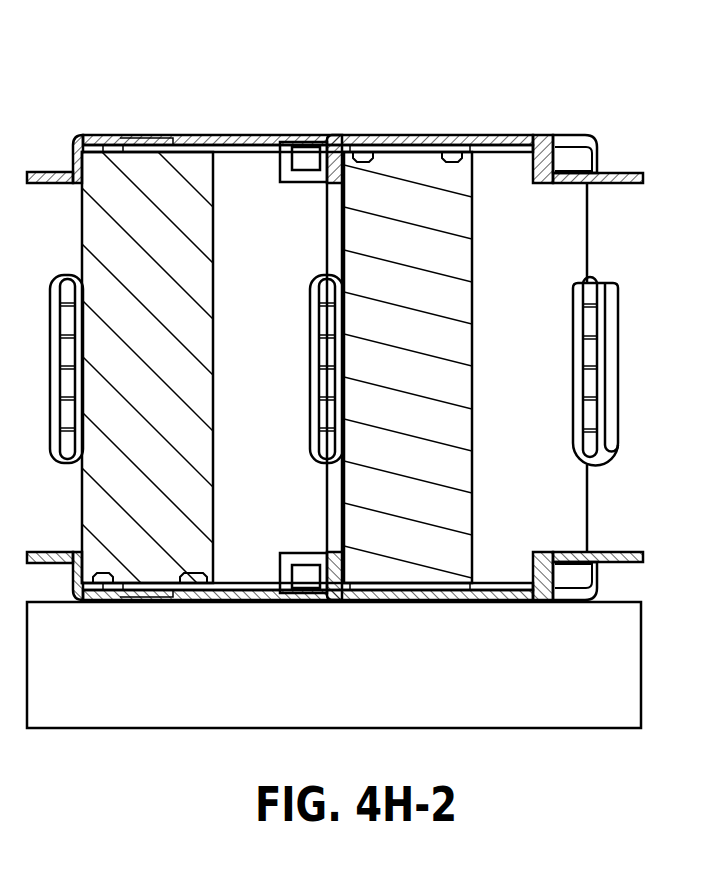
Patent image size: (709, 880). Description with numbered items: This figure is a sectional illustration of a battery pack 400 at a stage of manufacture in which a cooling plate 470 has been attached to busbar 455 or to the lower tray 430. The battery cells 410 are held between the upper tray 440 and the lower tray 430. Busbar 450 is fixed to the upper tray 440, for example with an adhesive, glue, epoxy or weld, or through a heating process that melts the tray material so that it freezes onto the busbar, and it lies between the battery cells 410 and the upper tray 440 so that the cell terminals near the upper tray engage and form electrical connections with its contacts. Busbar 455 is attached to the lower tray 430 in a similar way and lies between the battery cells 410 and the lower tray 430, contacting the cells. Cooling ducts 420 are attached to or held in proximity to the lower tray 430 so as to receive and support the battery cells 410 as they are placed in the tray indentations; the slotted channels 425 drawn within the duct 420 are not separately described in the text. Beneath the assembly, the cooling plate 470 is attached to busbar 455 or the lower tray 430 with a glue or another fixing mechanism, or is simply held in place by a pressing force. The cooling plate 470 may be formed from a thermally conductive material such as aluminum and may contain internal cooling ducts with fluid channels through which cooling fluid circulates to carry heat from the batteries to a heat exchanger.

The battery pack 400 is at (236, 92).
The battery cells 410 is at (560, 512).
The cooling duct 420 is at (612, 303).
The bracket slot segments 425 is at (591, 356).
The lower tray 430 is at (590, 603).
The upper tray 440 is at (578, 134).
The busbar 450 is at (466, 136).
The busbar 455 is at (473, 602).
The cooling plate 470 is at (577, 683).